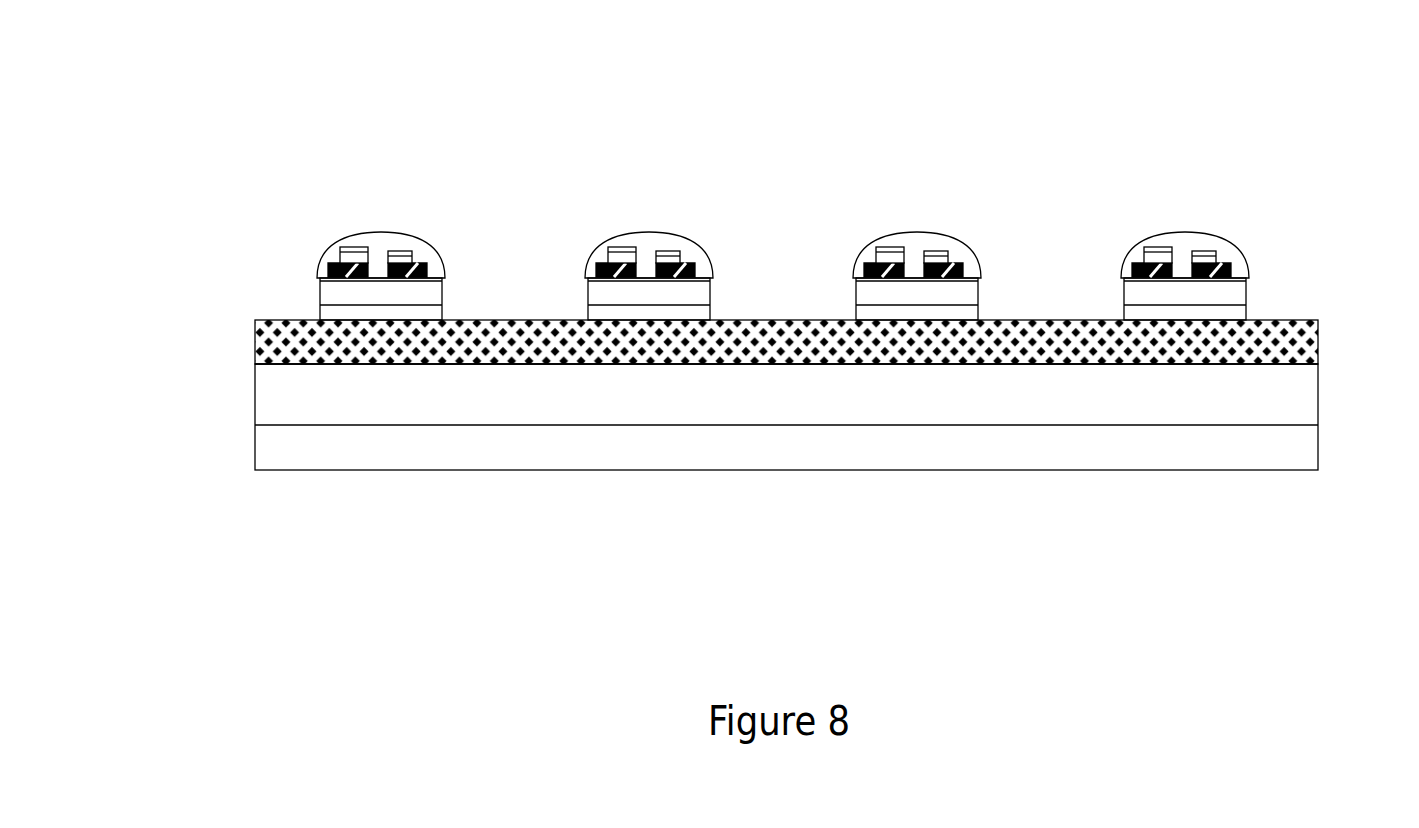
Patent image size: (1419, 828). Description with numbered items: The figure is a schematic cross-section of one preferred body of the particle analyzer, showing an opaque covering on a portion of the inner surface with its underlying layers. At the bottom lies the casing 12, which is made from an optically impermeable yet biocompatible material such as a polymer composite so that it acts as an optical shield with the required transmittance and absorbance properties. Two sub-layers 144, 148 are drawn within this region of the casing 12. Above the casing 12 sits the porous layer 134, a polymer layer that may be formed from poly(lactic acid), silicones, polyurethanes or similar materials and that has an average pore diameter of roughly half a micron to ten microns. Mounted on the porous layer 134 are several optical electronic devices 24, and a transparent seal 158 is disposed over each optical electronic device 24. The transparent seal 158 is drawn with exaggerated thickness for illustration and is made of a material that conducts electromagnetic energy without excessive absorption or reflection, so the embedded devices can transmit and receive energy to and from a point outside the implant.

The casing 12 is at (749, 460).
The optical electronic device 24 is at (1253, 292).
The porous layer 134 is at (243, 342).
The upper substrate layer 144 is at (1213, 380).
The lower substrate layer 148 is at (283, 405).
The transparent seal 158 is at (927, 225).